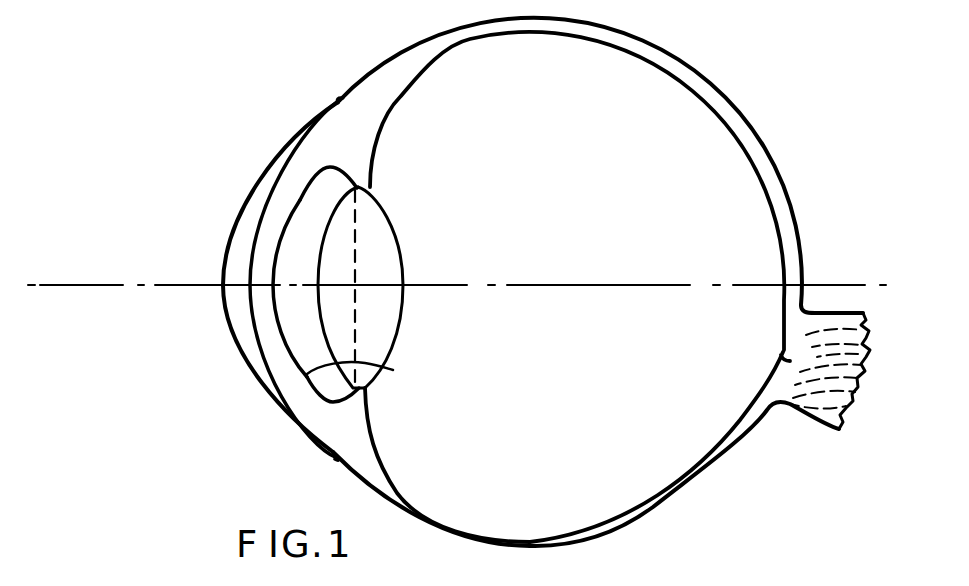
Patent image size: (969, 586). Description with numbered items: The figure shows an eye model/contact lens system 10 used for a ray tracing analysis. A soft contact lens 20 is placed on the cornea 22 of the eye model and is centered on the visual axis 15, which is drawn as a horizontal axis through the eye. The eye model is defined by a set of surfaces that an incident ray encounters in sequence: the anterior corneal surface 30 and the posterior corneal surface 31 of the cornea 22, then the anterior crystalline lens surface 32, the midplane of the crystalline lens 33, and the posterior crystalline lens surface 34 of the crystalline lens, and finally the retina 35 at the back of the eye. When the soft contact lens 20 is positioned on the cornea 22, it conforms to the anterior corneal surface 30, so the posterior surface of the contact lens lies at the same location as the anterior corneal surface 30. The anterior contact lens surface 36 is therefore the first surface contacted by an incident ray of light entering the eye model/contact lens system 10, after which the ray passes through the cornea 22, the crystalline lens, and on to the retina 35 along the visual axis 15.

The eye model/contact lens system 10 is at (800, 191).
The visual axis 15 is at (51, 283).
The soft contact lens 20 is at (237, 298).
The cornea 22 is at (267, 322).
The anterior corneal surface 30 is at (259, 354).
The posterior corneal surface 31 is at (370, 378).
The anterior crystalline lens surface 32 is at (327, 221).
The midplane of the crystalline lens 33 is at (356, 252).
The posterior crystalline lens surface 34 is at (406, 316).
The retina 35 is at (750, 407).
The anterior contact lens surface 36 is at (230, 233).